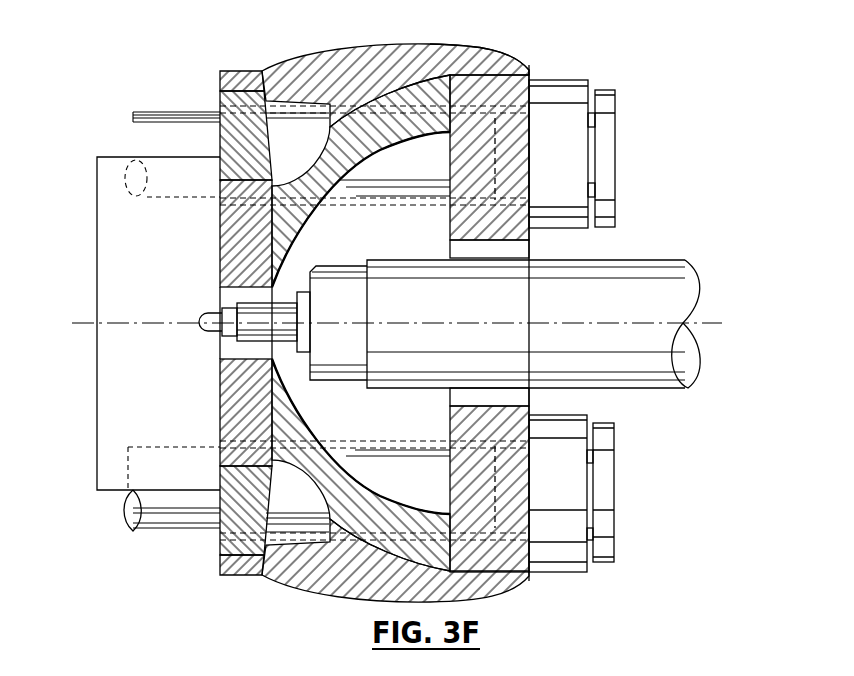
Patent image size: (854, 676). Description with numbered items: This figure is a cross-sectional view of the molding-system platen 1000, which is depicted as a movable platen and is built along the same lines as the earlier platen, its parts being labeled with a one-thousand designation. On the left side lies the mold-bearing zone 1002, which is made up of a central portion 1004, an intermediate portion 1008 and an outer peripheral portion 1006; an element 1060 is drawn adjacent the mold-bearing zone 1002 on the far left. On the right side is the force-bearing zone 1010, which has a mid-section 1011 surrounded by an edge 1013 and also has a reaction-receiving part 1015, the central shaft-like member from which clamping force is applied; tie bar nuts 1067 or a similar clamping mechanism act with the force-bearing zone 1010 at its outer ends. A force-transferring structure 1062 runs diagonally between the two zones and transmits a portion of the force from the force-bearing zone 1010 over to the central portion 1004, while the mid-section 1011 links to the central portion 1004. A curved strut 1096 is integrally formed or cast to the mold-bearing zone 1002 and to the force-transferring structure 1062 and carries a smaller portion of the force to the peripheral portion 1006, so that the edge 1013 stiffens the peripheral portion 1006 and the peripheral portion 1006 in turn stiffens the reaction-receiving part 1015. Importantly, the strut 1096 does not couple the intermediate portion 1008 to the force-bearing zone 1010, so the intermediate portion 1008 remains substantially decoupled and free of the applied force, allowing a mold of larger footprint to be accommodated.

The molding-system platen 1000 is at (703, 103).
The mold-bearing zone 1002 is at (220, 358).
The central portion 1004 is at (220, 220).
The peripheral portion 1006 is at (222, 78).
The intermediate portion 1008 is at (243, 132).
The force-bearing zone 1010 is at (528, 120).
The mid-section 1011 is at (505, 235).
The edge 1013 is at (501, 56).
The reaction-receiving part 1015 is at (530, 178).
The housing end box 1060 is at (97, 290).
The force-transferring structure 1062 is at (390, 138).
The tie bar nuts 1067 is at (567, 143).
The strut 1096 is at (312, 70).